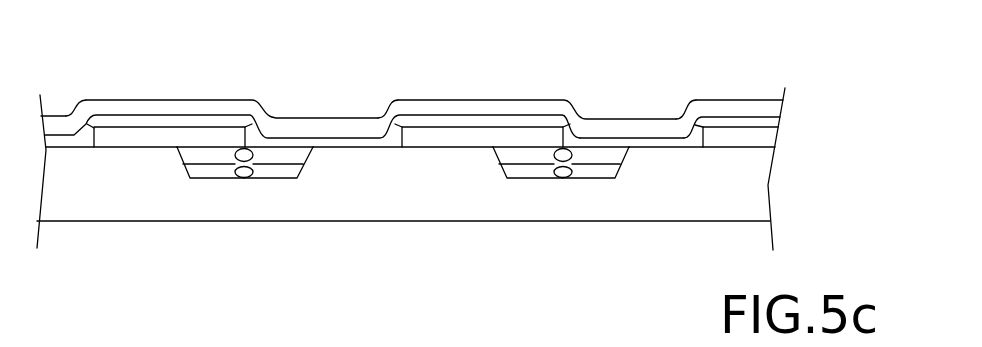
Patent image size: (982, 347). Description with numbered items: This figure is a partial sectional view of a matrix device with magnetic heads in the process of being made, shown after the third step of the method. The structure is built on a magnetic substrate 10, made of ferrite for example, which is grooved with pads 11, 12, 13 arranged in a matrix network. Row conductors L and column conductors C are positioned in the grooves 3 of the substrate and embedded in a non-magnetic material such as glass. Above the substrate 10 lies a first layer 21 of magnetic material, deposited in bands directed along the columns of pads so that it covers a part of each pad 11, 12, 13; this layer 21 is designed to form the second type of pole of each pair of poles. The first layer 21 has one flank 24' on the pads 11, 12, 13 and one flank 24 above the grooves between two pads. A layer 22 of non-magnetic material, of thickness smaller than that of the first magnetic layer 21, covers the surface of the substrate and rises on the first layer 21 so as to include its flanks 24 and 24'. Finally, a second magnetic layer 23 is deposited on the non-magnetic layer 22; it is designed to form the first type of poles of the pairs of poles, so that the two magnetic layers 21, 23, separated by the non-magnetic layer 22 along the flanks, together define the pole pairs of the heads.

The magnetic substrate 10 is at (762, 191).
The pad 11 is at (83, 186).
The pad 12 is at (408, 182).
The pad 13 is at (710, 200).
The first layer of magnetic material 21 is at (147, 138).
The layer of non-magnetic material 22 is at (332, 138).
The second magnetic layer 23 is at (628, 122).
The flank 24 is at (412, 78).
The flank 24' is at (381, 78).
The row conductors L is at (200, 170).
The grooves 3 is at (244, 178).
The column conductors C is at (277, 162).